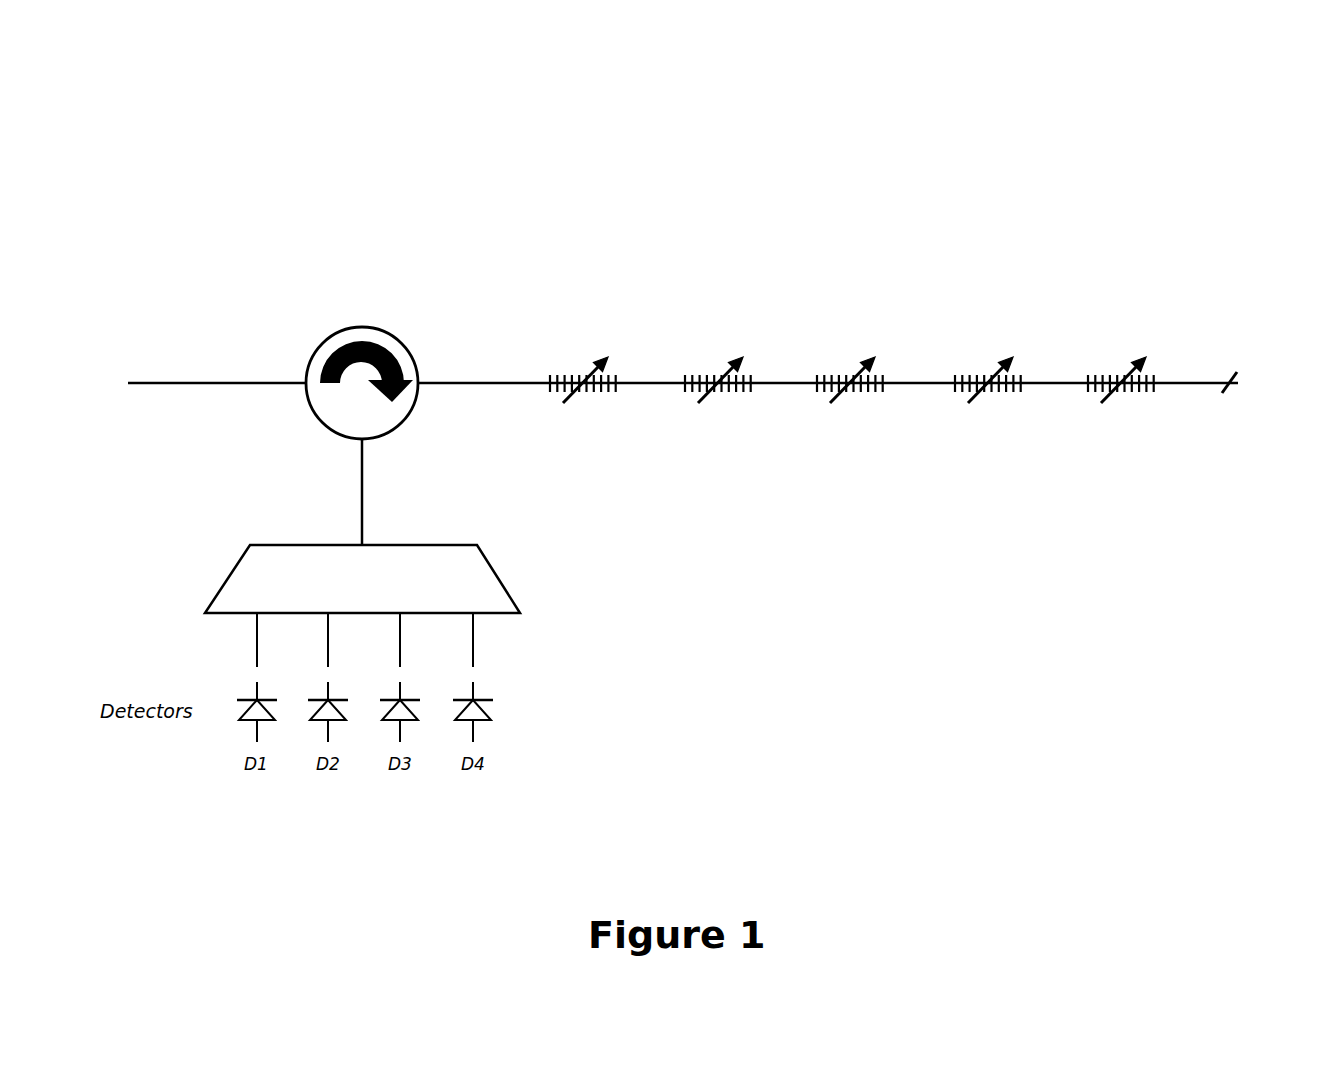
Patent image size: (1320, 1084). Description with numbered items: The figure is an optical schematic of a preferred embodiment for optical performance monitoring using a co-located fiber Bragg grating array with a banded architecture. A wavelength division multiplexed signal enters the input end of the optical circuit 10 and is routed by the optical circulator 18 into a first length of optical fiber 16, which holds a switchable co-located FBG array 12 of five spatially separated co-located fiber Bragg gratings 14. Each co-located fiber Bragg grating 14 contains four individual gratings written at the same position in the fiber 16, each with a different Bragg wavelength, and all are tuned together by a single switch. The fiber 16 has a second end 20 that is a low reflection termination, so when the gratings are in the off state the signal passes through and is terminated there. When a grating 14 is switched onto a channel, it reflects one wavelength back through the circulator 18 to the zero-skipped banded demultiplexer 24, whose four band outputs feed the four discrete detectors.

The optical circuit 10 is at (1146, 105).
The switchable co-located FBG array 12 is at (1143, 412).
The co-located fiber Bragg grating 14 is at (697, 362).
The optical fiber 16 is at (507, 377).
The optical circulator 18 is at (308, 355).
The second end 20 is at (1245, 383).
The banded demultiplexer 24 is at (217, 578).